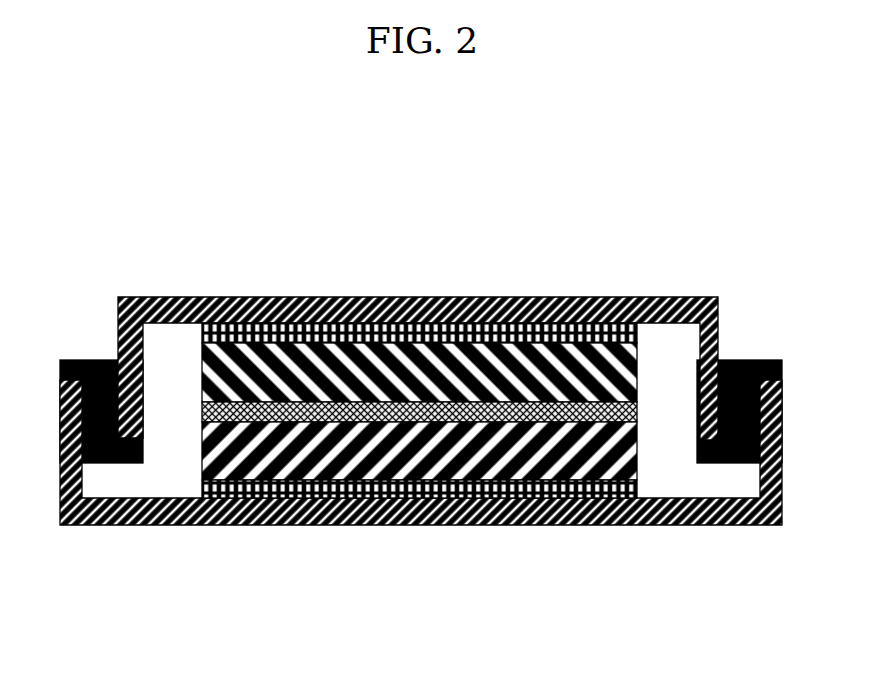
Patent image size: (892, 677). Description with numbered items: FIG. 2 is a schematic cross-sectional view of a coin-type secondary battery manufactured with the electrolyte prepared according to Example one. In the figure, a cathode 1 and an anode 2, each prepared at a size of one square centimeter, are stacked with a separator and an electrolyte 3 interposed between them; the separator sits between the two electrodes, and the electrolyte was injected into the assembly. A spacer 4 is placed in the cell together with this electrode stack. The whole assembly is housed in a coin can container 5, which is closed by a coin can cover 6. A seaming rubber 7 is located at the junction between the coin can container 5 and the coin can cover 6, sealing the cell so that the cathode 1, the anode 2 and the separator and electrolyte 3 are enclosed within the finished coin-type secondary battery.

The cathode 1 is at (418, 356).
The anode 2 is at (360, 468).
The separator and electrolyte 3 is at (502, 394).
The spacer 4 is at (300, 322).
The coin can container 5 is at (520, 545).
The coin can cover 6 is at (517, 280).
The seaming rubber 7 is at (100, 340).